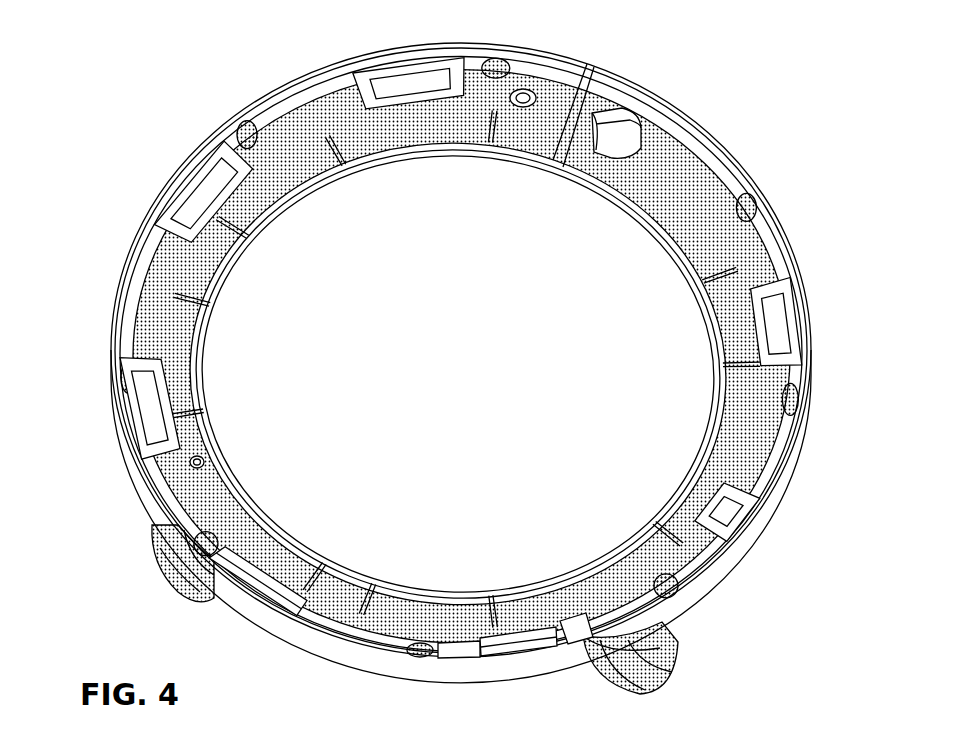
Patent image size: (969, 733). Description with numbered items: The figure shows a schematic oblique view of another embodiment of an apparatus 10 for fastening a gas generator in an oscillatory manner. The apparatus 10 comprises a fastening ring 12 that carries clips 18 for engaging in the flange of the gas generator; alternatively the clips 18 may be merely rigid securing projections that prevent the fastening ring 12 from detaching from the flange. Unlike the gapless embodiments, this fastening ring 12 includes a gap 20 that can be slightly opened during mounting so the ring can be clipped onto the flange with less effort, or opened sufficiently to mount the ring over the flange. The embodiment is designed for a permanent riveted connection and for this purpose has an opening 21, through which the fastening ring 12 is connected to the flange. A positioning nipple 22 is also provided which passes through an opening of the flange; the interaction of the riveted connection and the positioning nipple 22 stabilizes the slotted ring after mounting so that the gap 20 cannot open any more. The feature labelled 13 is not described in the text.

The apparatus 10 is at (701, 86).
The fastening ring 12 is at (722, 150).
The retaining tab 13 is at (231, 0).
The clips 18 is at (190, 185).
The gap 20 is at (592, 72).
The opening 21 is at (524, 96).
The positioning nipple 22 is at (603, 142).